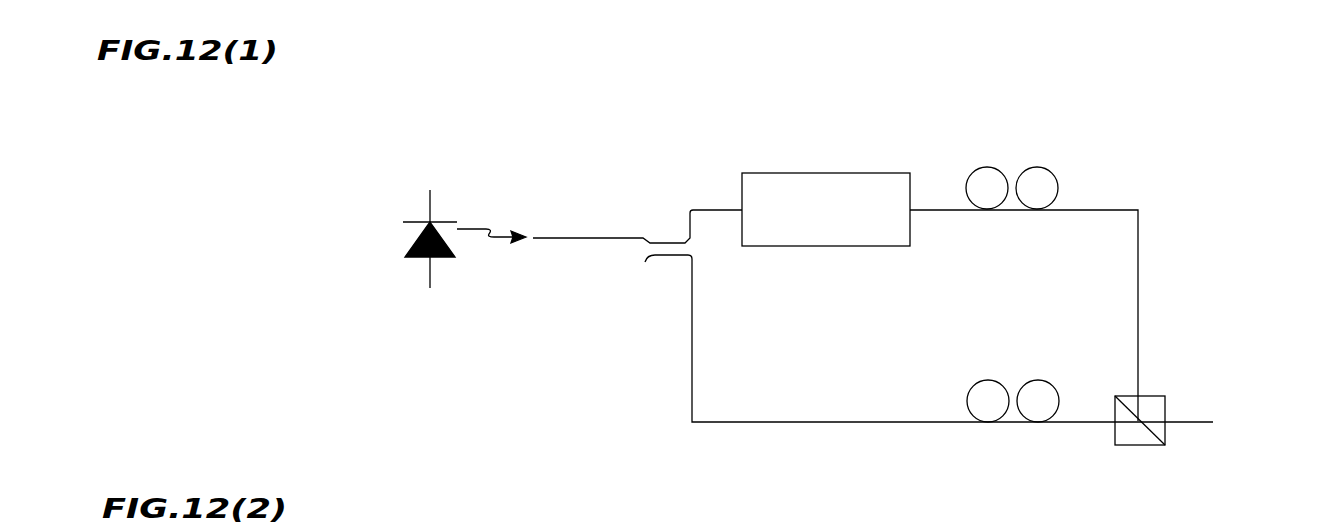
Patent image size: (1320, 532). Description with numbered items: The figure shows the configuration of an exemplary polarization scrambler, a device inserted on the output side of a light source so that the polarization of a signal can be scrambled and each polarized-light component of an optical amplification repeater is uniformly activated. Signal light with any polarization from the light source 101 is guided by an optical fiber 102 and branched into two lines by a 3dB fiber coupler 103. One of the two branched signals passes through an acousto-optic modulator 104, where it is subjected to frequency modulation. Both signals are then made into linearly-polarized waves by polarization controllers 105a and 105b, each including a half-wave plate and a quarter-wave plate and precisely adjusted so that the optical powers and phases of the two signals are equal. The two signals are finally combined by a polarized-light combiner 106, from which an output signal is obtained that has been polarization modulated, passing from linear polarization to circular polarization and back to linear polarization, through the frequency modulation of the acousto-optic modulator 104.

The light source 101 is at (437, 211).
The optical fiber 102 is at (600, 237).
The 3dB fiber coupler 103 is at (670, 258).
The acousto-optic modulator 104 is at (843, 173).
The polarization controller 105a is at (1063, 161).
The polarization controller 105b is at (1067, 375).
The polarized-light combiner 106 is at (1147, 445).